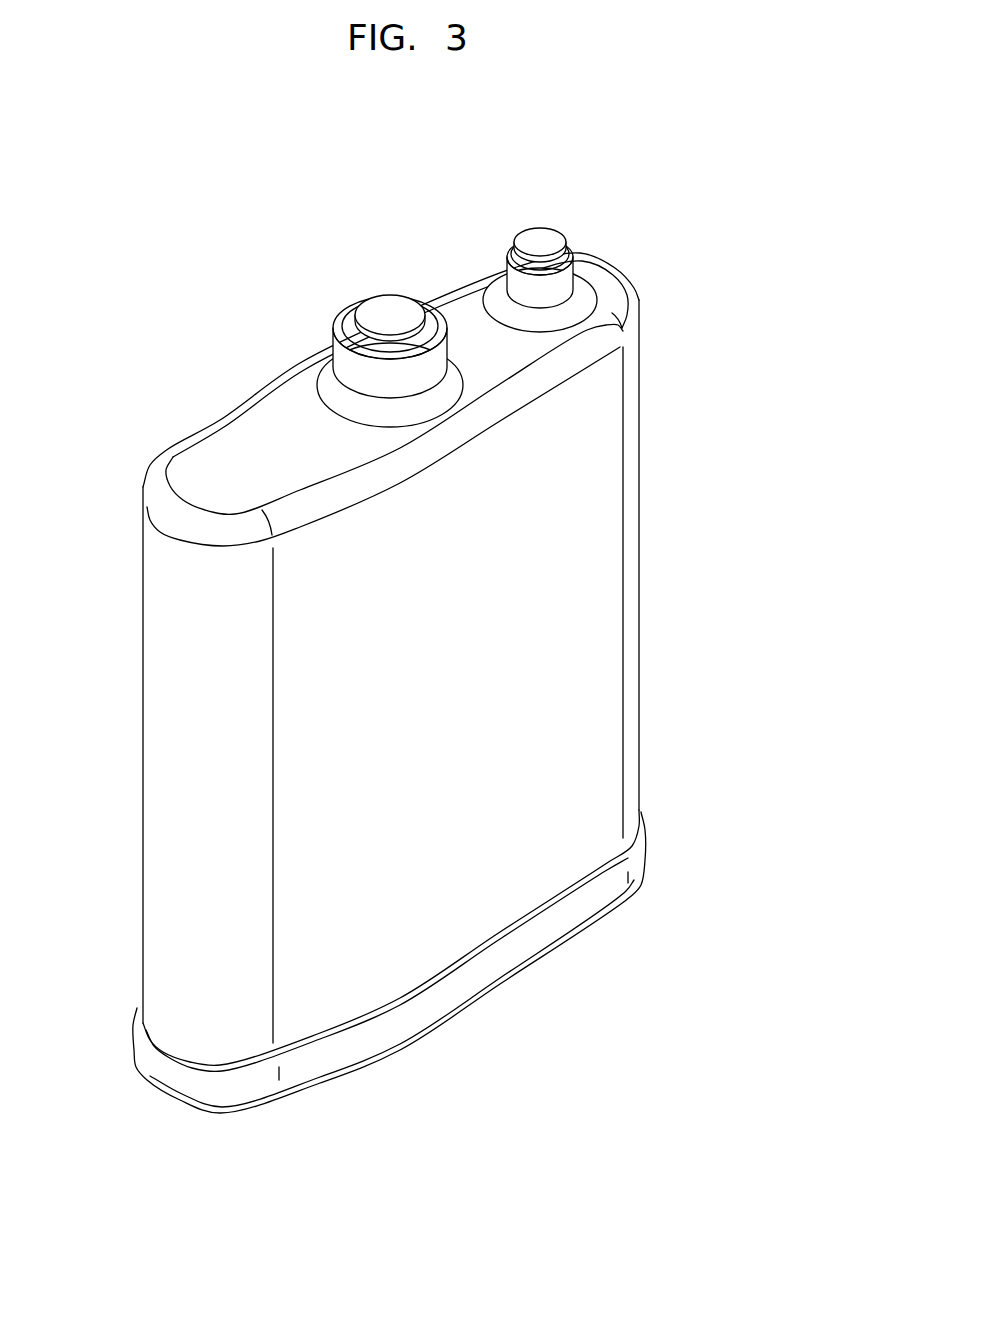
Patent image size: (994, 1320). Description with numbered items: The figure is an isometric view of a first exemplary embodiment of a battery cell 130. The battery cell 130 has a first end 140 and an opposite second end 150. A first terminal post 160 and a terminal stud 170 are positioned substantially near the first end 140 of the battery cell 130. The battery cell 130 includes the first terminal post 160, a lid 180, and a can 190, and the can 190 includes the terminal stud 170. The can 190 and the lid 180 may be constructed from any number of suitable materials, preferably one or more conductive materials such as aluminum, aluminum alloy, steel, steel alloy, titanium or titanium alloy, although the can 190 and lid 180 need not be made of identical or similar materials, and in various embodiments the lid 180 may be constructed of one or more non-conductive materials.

The battery cell 130 is at (662, 175).
The first end 140 is at (662, 271).
The second end 150 is at (679, 843).
The first terminal post 160 is at (388, 302).
The terminal stud 170 is at (537, 235).
The lid 180 is at (180, 1108).
The can 190 is at (645, 527).